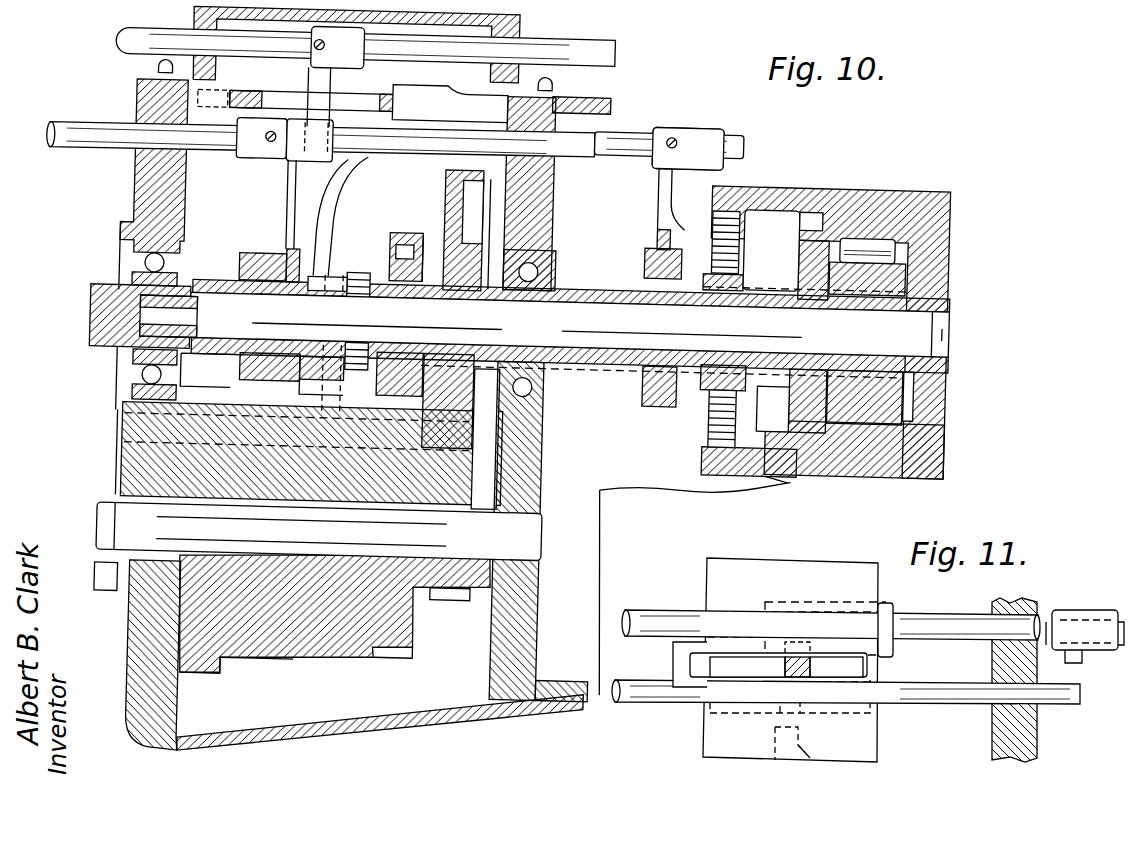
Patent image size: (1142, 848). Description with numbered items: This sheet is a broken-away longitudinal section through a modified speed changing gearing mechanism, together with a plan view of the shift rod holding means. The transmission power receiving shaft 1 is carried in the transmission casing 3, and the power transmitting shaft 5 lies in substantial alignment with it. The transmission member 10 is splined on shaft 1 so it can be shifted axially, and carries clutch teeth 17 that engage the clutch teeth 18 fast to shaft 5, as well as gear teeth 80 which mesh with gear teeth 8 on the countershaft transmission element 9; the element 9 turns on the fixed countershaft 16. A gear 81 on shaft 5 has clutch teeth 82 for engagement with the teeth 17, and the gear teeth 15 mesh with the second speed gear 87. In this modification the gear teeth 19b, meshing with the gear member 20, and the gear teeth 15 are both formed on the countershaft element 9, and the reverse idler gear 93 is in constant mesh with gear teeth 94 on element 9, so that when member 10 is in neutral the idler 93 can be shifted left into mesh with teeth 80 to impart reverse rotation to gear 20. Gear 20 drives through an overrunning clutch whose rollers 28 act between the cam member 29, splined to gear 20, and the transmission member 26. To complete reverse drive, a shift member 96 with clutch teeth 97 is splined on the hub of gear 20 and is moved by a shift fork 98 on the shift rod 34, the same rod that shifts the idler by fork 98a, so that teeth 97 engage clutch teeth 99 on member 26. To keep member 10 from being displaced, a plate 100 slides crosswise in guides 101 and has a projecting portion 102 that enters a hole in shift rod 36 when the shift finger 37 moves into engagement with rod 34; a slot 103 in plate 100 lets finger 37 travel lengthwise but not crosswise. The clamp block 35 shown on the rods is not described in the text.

In FIG. 10, the transmission power receiving shaft 1 is at (97, 296).
In FIG. 10, the transmission casing 3 is at (414, 735).
In FIG. 10, the power transmitting shaft 5 is at (588, 314).
In FIG. 10, the gear teeth 8 is at (215, 680).
In FIG. 10, the countershaft transmission element 9 is at (333, 645).
In FIG. 10, the transmission member 10 is at (239, 372).
In FIG. 10, the gear teeth 15 is at (407, 656).
In FIG. 10, the fixed countershaft 16 is at (528, 525).
In FIG. 10, the clutch teeth 17 is at (334, 257).
In FIG. 10, the clutch teeth 18 is at (349, 276).
In FIG. 10, the gear teeth 19b is at (453, 600).
In FIG. 10, the gear member 20 is at (440, 192).
In FIG. 10, the transmission member 26 is at (942, 449).
In FIG. 10, the rollers 28 is at (858, 233).
In FIG. 10, the cam member 29 is at (860, 406).
In FIG. 10, the shift rod 34 is at (618, 135).
In FIG. 11, the shift rod 34 is at (950, 624).
In FIG. 10, the clamp arm 35 is at (287, 191).
In FIG. 10, the shift rod 36 is at (81, 136).
In FIG. 11, the shift rod 36 is at (648, 700).
In FIG. 10, the shift finger 37 is at (304, 83).
In FIG. 11, the shift finger 37 is at (797, 678).
In FIG. 10, the gear teeth 80 is at (249, 265).
In FIG. 10, the gear 81 is at (420, 242).
In FIG. 10, the clutch teeth 82 is at (381, 244).
In FIG. 10, the second speed gear 87 is at (401, 235).
In FIG. 10, the reverse idler gear 93 is at (325, 390).
In FIG. 10, the gear teeth 94 is at (275, 667).
In FIG. 10, the shift member 96 is at (764, 266).
In FIG. 10, the clutch teeth 97 is at (793, 215).
In FIG. 10, the shift fork 98 is at (655, 203).
In FIG. 11, the shift fork 98 is at (1080, 663).
In FIG. 10, the shift fork 98a is at (345, 196).
In FIG. 10, the clutch teeth 99 is at (710, 215).
In FIG. 10, the plate 100 is at (342, 104).
In FIG. 11, the plate 100 is at (870, 748).
In FIG. 10, the guides 101 is at (409, 98).
In FIG. 11, the projecting portion 102 is at (805, 752).
In FIG. 11, the slot 103 is at (690, 663).